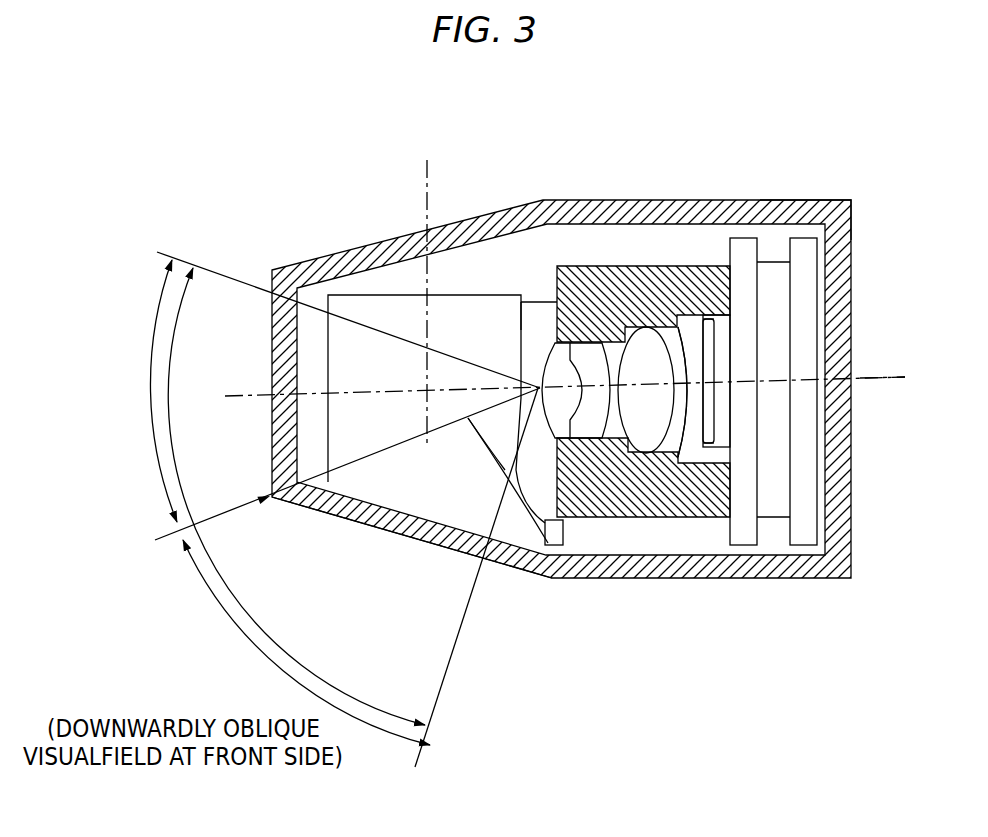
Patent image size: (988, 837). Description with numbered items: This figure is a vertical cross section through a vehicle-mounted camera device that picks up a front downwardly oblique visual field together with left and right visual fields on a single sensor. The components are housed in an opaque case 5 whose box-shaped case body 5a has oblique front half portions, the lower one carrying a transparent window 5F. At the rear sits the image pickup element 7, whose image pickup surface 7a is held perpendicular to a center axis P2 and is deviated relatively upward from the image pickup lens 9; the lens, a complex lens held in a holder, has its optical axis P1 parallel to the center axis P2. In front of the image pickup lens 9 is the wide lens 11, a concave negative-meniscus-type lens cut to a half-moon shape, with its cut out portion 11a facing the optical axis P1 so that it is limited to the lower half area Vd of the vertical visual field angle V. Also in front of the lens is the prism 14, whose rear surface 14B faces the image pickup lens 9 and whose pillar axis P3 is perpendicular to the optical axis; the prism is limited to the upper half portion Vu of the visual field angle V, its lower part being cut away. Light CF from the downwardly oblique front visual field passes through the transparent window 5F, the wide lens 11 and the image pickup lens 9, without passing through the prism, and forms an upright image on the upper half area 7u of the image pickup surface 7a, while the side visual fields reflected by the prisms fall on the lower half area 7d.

The case 5 is at (680, 196).
The case body 5a is at (752, 199).
The transparent window 5F is at (402, 522).
The image pickup element 7 is at (715, 452).
The image pickup surface 7a is at (700, 345).
The upper half area 7u is at (705, 340).
The lower half area 7d is at (712, 410).
The image pickup lens 9 is at (685, 347).
The wide lens 11 is at (547, 523).
The cut out portion 11a is at (490, 403).
The prism 14 is at (355, 292).
The rear surface 14B is at (530, 320).
The light from the downwardly oblique front visual field CF is at (237, 512).
The vertical visual field angle V is at (175, 367).
The upper half portion of the vertical visual field angle Vu is at (152, 380).
The lower half area of the vertical visual field angle Vd is at (225, 617).
The optical axis P1 is at (230, 398).
The center axis P2 is at (863, 377).
The pillar axis P3 is at (422, 168).